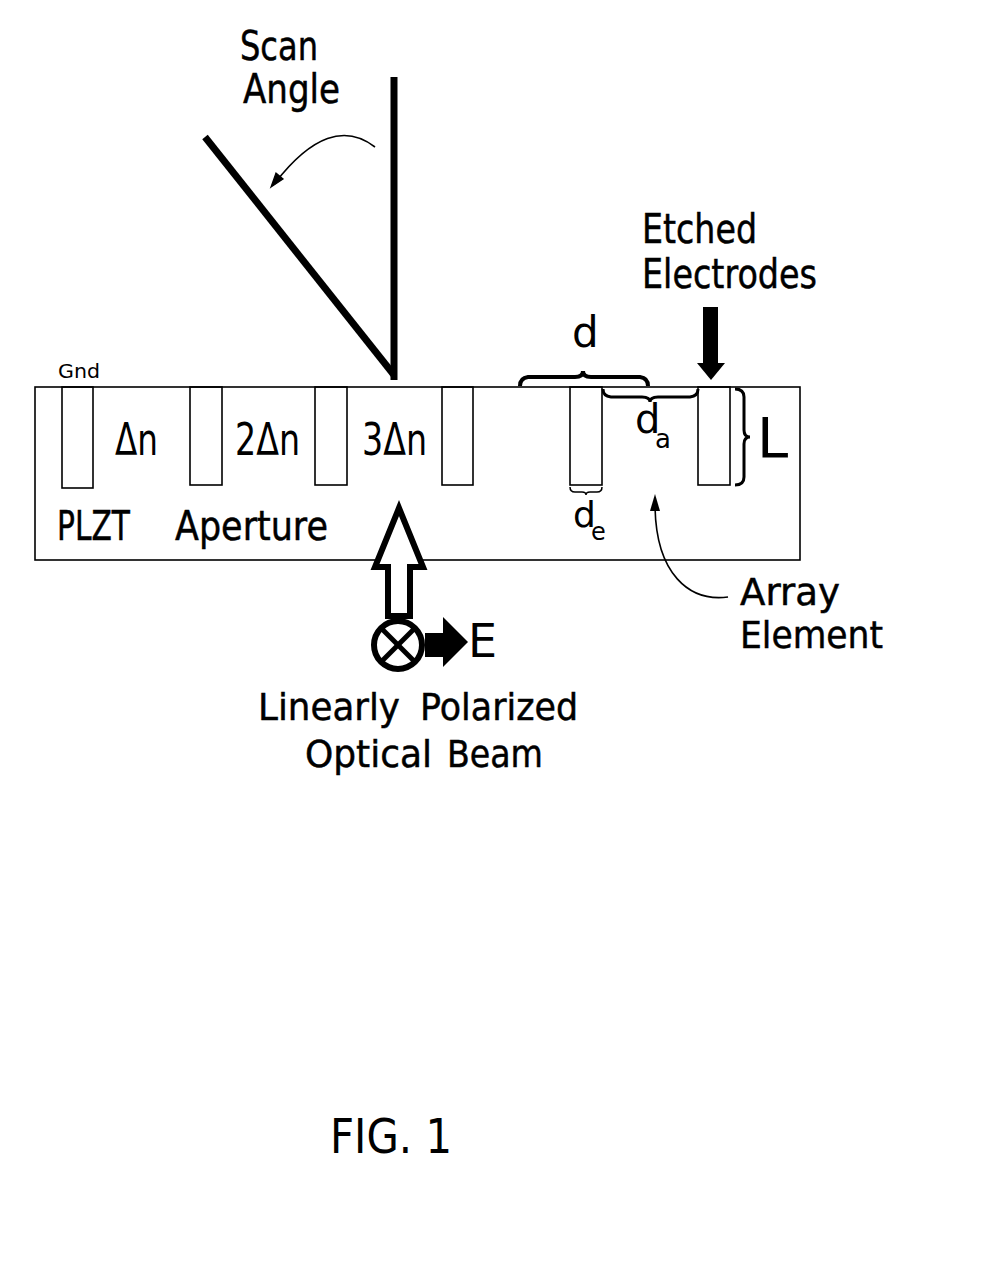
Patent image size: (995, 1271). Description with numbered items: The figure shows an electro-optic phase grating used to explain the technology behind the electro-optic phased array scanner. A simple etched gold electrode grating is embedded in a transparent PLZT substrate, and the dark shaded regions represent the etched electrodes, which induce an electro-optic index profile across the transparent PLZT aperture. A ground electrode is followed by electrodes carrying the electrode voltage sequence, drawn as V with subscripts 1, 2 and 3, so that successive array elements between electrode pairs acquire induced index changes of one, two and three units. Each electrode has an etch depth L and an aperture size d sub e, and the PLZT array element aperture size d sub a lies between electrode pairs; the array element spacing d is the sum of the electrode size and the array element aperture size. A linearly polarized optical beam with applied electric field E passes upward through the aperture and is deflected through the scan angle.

The first voltage electrode V1 1 is at (208, 402).
The second voltage electrode V2 2 is at (335, 402).
The third voltage electrode V3 3 is at (460, 402).